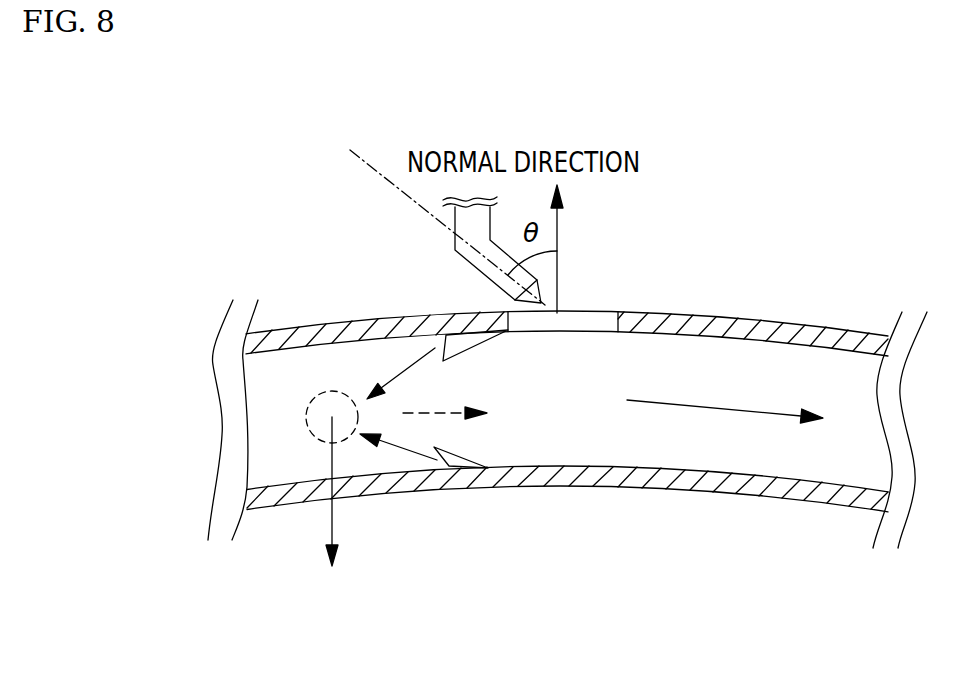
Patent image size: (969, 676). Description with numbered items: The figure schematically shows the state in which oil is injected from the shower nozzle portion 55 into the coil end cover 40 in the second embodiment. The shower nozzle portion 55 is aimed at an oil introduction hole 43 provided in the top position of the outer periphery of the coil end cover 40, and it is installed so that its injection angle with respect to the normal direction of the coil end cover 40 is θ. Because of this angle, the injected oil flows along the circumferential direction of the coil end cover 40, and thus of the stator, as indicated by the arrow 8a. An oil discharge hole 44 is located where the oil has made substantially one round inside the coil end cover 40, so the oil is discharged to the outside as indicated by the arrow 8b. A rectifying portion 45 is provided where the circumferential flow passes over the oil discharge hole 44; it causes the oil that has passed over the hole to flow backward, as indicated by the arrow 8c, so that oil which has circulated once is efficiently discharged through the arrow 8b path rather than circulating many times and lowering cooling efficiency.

The coil end cover 40 is at (567, 436).
The oil introduction hole 43 is at (613, 322).
The oil discharge hole 44 is at (310, 412).
The rectifying portion 45 is at (447, 333).
The shower nozzle portion 55 is at (482, 270).
The arrow indicating oil flow along circumferential direction 8a is at (750, 407).
The arrow indicating oil discharge 8b is at (345, 515).
The arrow indicating backward oil flow 8c is at (397, 373).